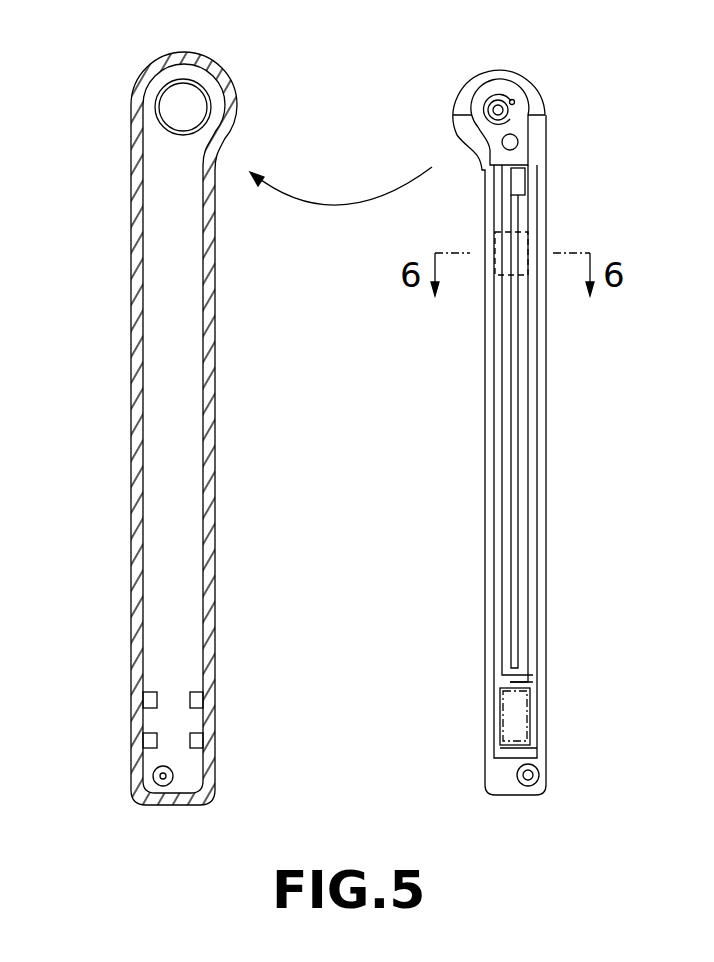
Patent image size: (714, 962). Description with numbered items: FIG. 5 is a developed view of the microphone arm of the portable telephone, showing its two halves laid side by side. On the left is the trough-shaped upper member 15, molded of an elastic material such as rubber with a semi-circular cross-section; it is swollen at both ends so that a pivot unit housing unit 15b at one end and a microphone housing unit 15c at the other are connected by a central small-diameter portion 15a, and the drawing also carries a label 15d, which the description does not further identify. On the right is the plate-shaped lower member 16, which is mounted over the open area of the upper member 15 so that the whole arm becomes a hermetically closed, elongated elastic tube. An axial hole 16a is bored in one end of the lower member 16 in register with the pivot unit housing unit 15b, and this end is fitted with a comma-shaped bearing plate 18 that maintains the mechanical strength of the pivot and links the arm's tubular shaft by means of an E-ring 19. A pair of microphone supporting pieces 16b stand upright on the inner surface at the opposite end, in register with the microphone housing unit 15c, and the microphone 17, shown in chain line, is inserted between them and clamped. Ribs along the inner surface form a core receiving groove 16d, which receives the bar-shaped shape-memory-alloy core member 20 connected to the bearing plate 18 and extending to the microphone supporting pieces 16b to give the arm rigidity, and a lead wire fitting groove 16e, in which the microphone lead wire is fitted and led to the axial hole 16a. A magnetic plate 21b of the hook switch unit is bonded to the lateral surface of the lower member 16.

The upper member 15 is at (124, 355).
The central small-diameter portion 15a is at (132, 466).
The pivot unit housing unit 15b is at (131, 96).
The microphone housing unit 15c is at (210, 742).
The engaging projection 15d is at (142, 722).
The lower member 16 is at (562, 352).
The axial hole 16a is at (514, 101).
The microphone supporting pieces 16b is at (533, 680).
The core receiving groove 16d is at (529, 535).
The lead wire fitting groove 16e is at (494, 637).
The microphone 17 is at (515, 712).
The bearing plate 18 is at (522, 127).
The E-ring 19 is at (492, 96).
The core member 20 is at (519, 598).
The magnetic plate 21b is at (528, 238).